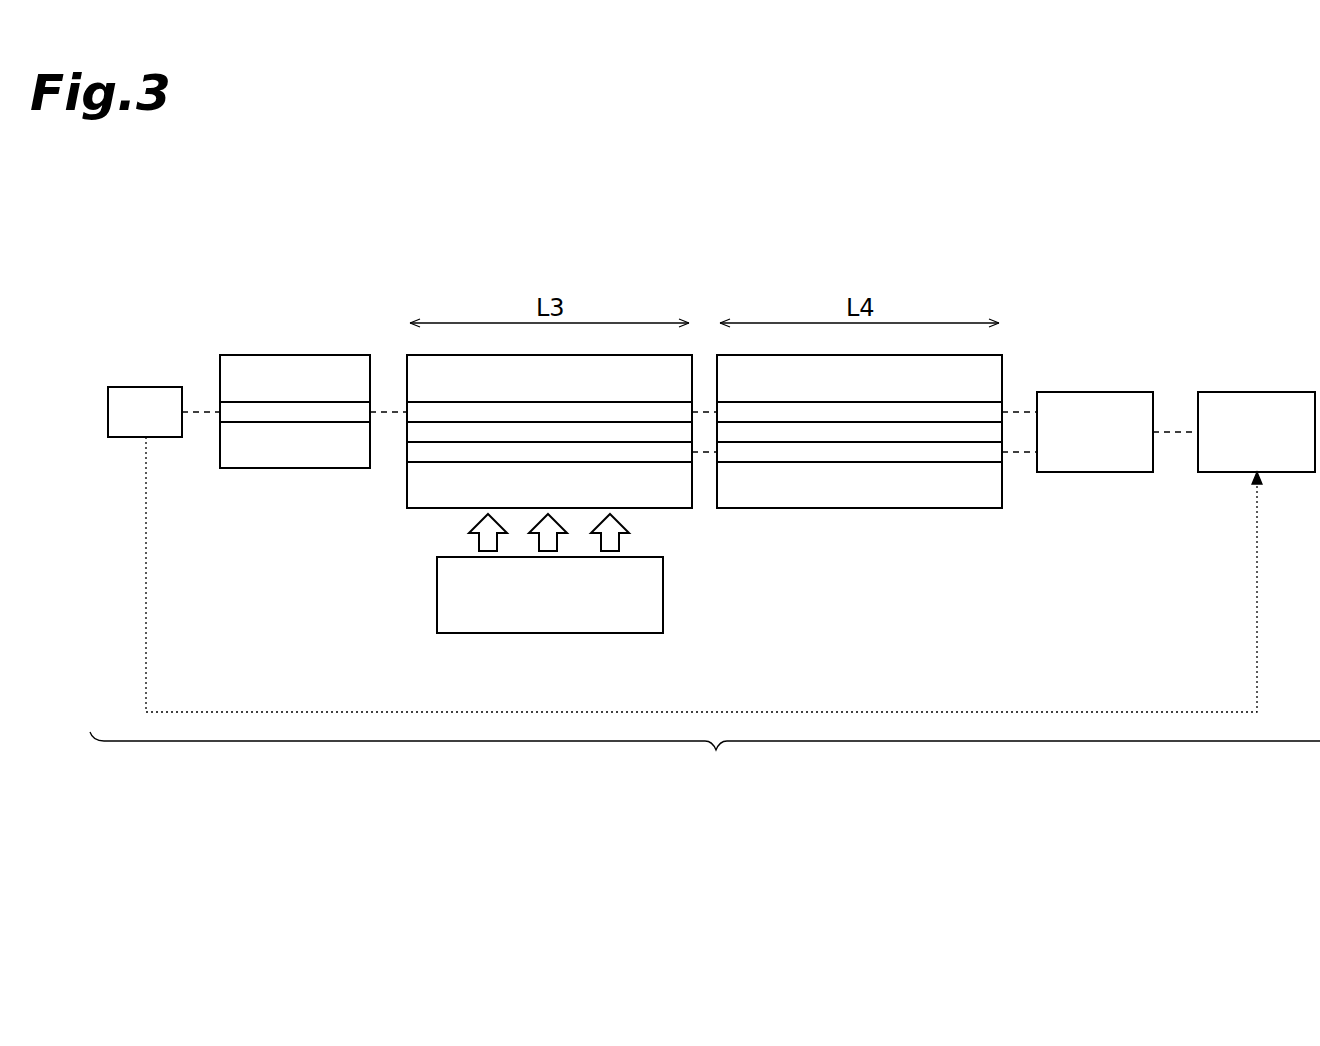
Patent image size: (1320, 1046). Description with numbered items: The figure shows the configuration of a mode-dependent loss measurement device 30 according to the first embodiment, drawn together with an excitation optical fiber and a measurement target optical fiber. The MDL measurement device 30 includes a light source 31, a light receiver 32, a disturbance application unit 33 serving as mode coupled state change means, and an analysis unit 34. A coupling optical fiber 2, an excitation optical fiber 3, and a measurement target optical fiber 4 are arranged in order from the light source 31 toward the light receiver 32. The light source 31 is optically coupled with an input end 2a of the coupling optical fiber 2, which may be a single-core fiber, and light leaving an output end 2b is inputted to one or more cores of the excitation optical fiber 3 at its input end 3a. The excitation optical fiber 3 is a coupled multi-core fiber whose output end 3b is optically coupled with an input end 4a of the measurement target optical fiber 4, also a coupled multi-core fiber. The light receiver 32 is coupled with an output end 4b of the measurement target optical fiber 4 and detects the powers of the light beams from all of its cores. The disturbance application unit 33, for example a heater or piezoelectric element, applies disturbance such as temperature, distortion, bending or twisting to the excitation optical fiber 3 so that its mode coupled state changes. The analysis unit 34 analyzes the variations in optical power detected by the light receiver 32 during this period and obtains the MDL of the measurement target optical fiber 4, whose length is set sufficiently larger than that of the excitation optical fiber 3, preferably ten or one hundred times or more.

The mode-dependent loss measurement device 30 is at (950, 230).
The light source 31 is at (146, 387).
The coupling optical fiber 2 is at (296, 470).
The input end of coupling optical fiber 2a is at (220, 380).
The output end of coupling optical fiber 2b is at (370, 380).
The excitation optical fiber 3 is at (426, 500).
The input end of excitation optical fiber 3a is at (407, 492).
The output end of excitation optical fiber 3b is at (692, 492).
The measurement target optical fiber 4 is at (865, 500).
The input end of measurement target optical fiber 4a is at (721, 492).
The output end of measurement target optical fiber 4b is at (1002, 492).
The light receiver 32 is at (1093, 392).
The disturbance application unit 33 is at (553, 634).
The analysis unit 34 is at (1255, 392).